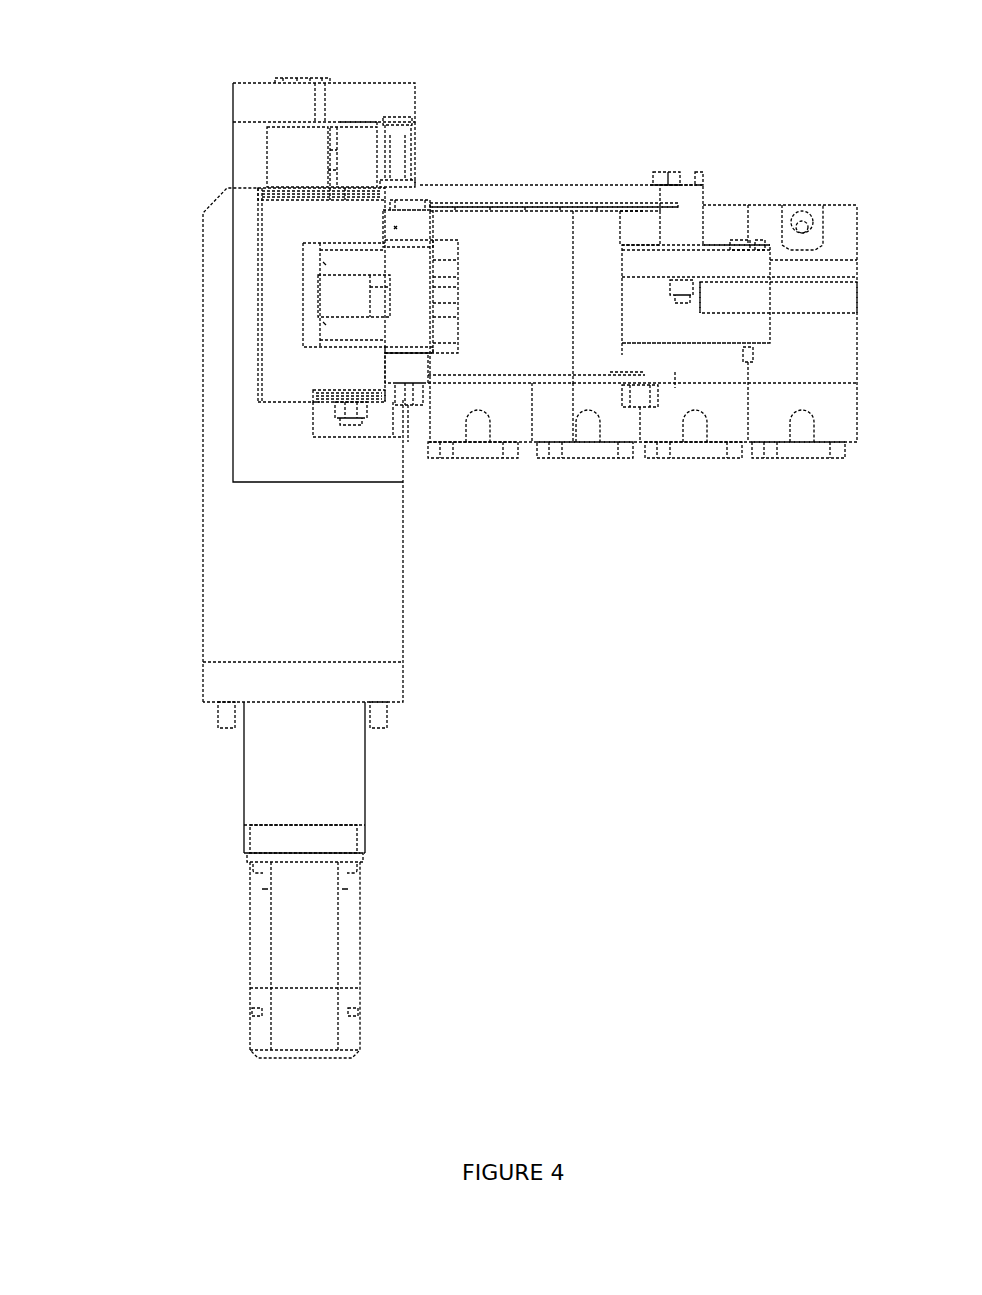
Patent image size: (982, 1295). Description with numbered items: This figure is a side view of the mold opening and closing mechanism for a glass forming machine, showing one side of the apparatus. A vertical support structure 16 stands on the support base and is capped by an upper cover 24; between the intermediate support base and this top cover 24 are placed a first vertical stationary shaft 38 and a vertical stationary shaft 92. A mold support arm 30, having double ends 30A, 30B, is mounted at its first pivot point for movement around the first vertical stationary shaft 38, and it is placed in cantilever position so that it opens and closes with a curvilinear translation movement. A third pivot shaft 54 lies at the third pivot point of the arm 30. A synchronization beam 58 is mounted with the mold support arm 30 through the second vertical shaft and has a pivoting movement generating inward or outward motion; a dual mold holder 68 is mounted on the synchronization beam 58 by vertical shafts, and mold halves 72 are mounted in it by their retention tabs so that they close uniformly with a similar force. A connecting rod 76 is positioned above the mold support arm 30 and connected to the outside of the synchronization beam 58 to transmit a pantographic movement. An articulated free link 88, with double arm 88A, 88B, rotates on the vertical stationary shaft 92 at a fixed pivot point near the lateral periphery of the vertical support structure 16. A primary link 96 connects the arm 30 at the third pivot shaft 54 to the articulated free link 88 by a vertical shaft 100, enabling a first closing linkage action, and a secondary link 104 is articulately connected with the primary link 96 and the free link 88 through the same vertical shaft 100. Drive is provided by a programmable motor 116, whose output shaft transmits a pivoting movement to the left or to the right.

The vertical support structure 16 is at (238, 512).
The upper cover 24 is at (275, 98).
The mold support arm 30 is at (517, 275).
The end of mold support arm 30A is at (432, 200).
The end of mold support arm 30B is at (617, 222).
The first vertical stationary shaft 38 is at (360, 128).
The third pivot shaft 54 is at (403, 398).
The synchronization beam 58 is at (676, 320).
The dual mold holder 68 is at (812, 283).
The mold halves 72 is at (822, 400).
The connecting rod 76 is at (504, 192).
The articulated free link 88 is at (275, 278).
The arm of articulated free link 88A is at (338, 200).
The arm of articulated free link 88B is at (338, 362).
The vertical stationary shaft 92 is at (275, 150).
The primary link 96 is at (418, 302).
The vertical shaft 100 is at (348, 410).
The secondary link 104 is at (338, 303).
The programmable motor 116 is at (275, 898).